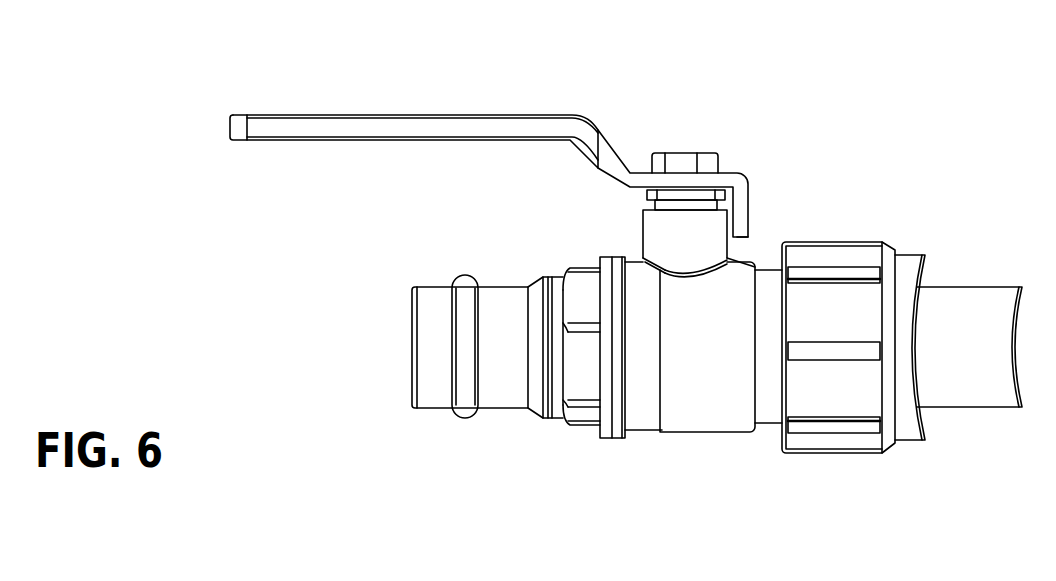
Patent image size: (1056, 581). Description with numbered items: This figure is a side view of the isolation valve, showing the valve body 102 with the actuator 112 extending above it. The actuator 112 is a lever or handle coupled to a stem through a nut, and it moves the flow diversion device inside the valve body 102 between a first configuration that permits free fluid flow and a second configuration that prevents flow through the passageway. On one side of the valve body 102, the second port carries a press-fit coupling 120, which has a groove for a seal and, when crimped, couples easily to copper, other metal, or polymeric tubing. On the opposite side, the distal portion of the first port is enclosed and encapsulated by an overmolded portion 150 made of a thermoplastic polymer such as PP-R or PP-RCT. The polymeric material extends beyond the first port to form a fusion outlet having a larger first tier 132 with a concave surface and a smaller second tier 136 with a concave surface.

The valve body 102 is at (703, 393).
The actuator 112 is at (383, 115).
The press-fit coupling 120 is at (498, 392).
The first tier 132 is at (907, 262).
The second tier 136 is at (970, 310).
The overmolded portion 150 is at (832, 257).